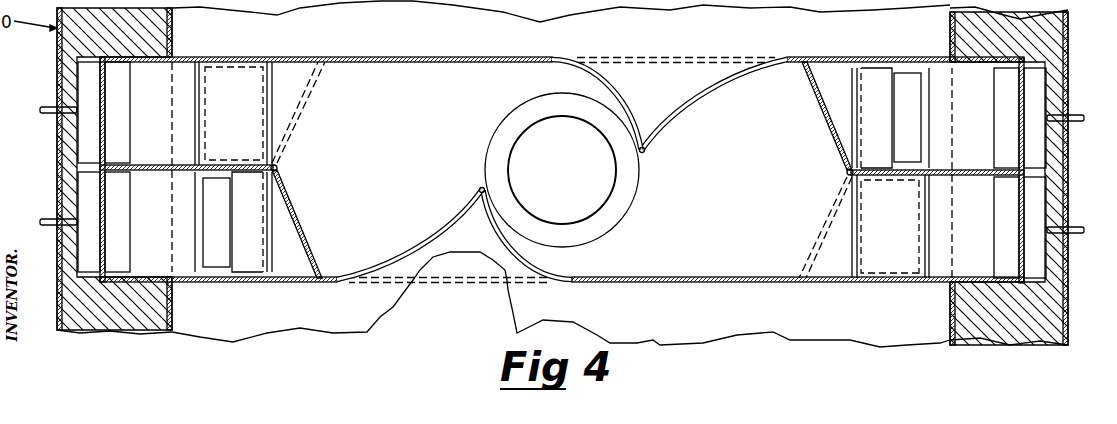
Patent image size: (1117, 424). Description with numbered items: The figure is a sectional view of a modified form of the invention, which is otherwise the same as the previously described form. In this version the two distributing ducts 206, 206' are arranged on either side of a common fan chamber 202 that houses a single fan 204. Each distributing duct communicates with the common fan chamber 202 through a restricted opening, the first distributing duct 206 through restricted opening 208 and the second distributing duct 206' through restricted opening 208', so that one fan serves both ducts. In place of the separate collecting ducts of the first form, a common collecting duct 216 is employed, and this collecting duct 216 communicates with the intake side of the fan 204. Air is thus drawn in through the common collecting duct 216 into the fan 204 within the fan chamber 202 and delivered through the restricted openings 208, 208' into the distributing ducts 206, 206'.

The common fan chamber 202 is at (623, 97).
The single fan 204 is at (518, 105).
The distributing duct 206 is at (326, 43).
The distributing duct 206' is at (798, 296).
The restricted opening 208 is at (455, 178).
The restricted opening 208' is at (667, 167).
The common collecting duct 216 is at (452, 280).